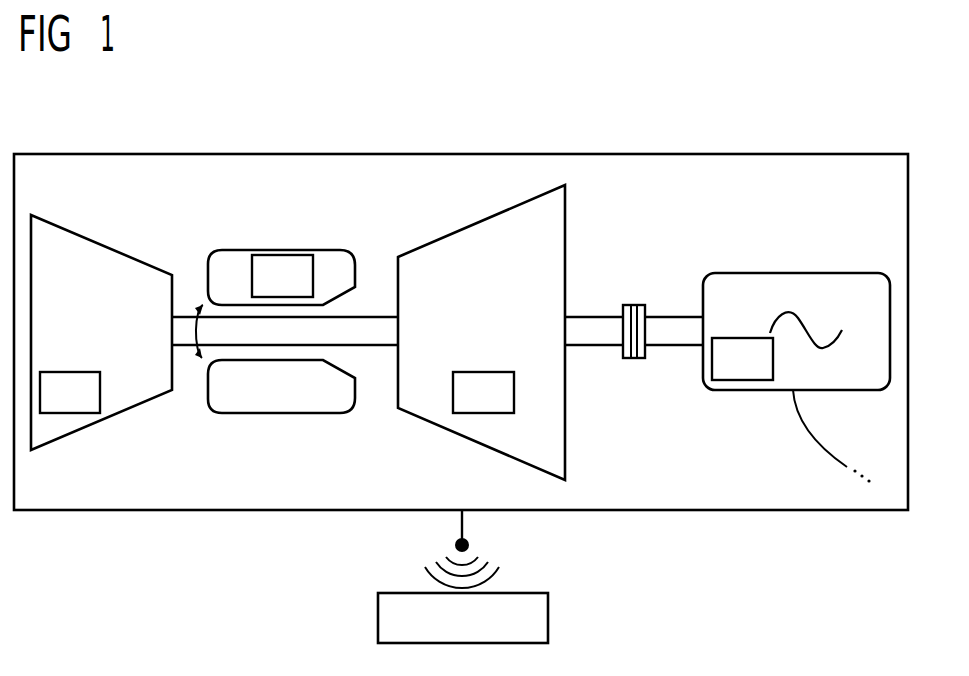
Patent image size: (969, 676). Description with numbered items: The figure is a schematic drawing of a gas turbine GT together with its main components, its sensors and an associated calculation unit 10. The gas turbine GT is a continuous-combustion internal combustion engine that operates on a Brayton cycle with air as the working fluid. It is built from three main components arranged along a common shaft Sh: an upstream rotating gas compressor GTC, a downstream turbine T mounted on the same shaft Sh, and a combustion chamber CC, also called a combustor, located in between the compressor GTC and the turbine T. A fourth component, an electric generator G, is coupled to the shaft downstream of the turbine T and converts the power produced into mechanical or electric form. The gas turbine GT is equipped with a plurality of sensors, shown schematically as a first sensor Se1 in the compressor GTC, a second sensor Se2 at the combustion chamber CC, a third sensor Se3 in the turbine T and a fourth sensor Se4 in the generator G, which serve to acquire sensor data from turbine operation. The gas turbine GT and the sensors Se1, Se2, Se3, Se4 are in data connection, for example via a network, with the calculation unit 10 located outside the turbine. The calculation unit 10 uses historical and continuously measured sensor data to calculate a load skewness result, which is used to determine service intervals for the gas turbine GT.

The gas turbine GT is at (788, 144).
The gas compressor GTC is at (101, 332).
The combustion chamber CC is at (210, 237).
The shaft Sh is at (375, 314).
The turbine T is at (481, 332).
The electric generator G is at (797, 273).
The sensor Se1 is at (70, 392).
The sensor Se2 is at (282, 276).
The sensor Se3 is at (483, 392).
The sensor Se4 is at (742, 359).
The calculation unit 10 is at (477, 632).